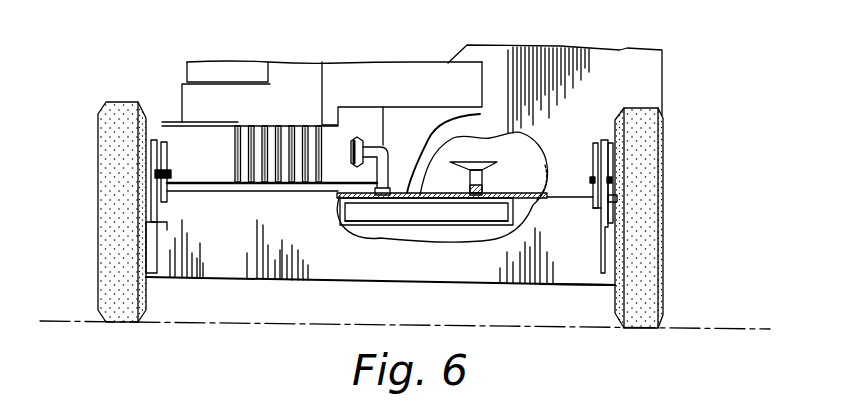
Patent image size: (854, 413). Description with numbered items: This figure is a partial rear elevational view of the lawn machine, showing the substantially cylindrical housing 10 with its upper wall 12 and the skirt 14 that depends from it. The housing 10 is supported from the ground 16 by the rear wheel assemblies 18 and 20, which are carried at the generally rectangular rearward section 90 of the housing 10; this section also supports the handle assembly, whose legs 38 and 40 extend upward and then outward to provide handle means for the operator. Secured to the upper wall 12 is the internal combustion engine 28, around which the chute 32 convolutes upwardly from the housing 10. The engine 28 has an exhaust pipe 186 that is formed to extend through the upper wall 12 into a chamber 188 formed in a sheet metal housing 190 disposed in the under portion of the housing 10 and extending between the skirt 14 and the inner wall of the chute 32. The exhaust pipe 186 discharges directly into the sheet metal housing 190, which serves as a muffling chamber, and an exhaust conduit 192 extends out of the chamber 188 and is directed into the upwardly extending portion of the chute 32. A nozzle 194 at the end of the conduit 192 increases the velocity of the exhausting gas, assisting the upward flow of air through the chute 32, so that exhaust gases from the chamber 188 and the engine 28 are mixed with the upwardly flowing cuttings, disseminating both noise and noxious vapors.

The housing 10 is at (286, 287).
The upper wall 12 is at (340, 200).
The skirt 14 is at (200, 282).
The ground 16 is at (730, 328).
The rear wheel assembly 18 is at (94, 245).
The rear wheel assembly 20 is at (670, 172).
The internal combustion engine 28 is at (311, 58).
The chute 32 is at (628, 47).
The leg 38 is at (167, 202).
The leg 40 is at (593, 143).
The rectangular section 90 is at (580, 280).
The exhaust pipe 186 is at (384, 172).
The chamber 188 is at (450, 222).
The sheet metal housing 190 is at (417, 227).
The exhaust conduit 192 is at (482, 183).
The nozzle 194 is at (479, 162).